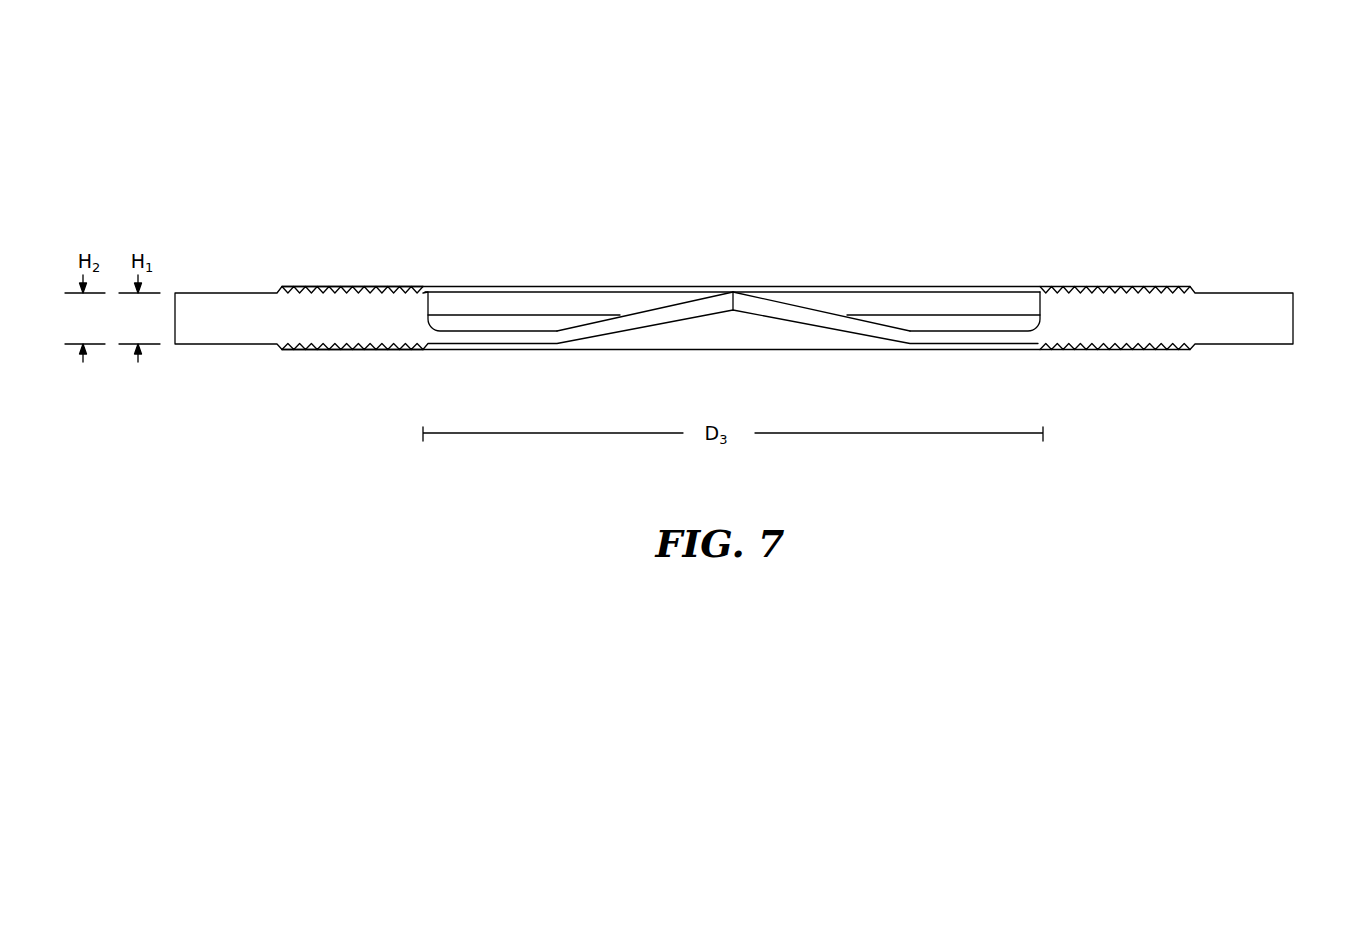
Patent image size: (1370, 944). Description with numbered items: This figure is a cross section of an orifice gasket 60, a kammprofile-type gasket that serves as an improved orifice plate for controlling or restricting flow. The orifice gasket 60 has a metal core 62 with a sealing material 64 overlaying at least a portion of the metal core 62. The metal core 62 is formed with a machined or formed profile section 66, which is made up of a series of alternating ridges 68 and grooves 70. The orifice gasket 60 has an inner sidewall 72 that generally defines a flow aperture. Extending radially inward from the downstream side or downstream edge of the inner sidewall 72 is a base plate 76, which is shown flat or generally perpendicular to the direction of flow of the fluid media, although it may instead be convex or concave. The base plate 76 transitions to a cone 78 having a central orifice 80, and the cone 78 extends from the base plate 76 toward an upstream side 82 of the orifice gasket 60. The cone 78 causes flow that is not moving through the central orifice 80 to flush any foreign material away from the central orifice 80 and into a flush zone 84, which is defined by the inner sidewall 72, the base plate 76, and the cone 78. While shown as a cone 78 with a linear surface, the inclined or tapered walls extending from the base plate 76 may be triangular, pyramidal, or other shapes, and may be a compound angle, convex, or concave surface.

The orifice gasket 60 is at (1023, 70).
The metal core 62 is at (1283, 327).
The sealing material 64 is at (1166, 287).
The profile section 66 is at (423, 262).
The ridges 68 is at (288, 290).
The grooves 70 is at (307, 295).
The inner sidewall 72 is at (1020, 314).
The base plate 76 is at (508, 338).
The cone 78 is at (822, 320).
The central orifice 80 is at (733, 292).
The upstream side 82 is at (903, 140).
The flush zone 84 is at (612, 297).